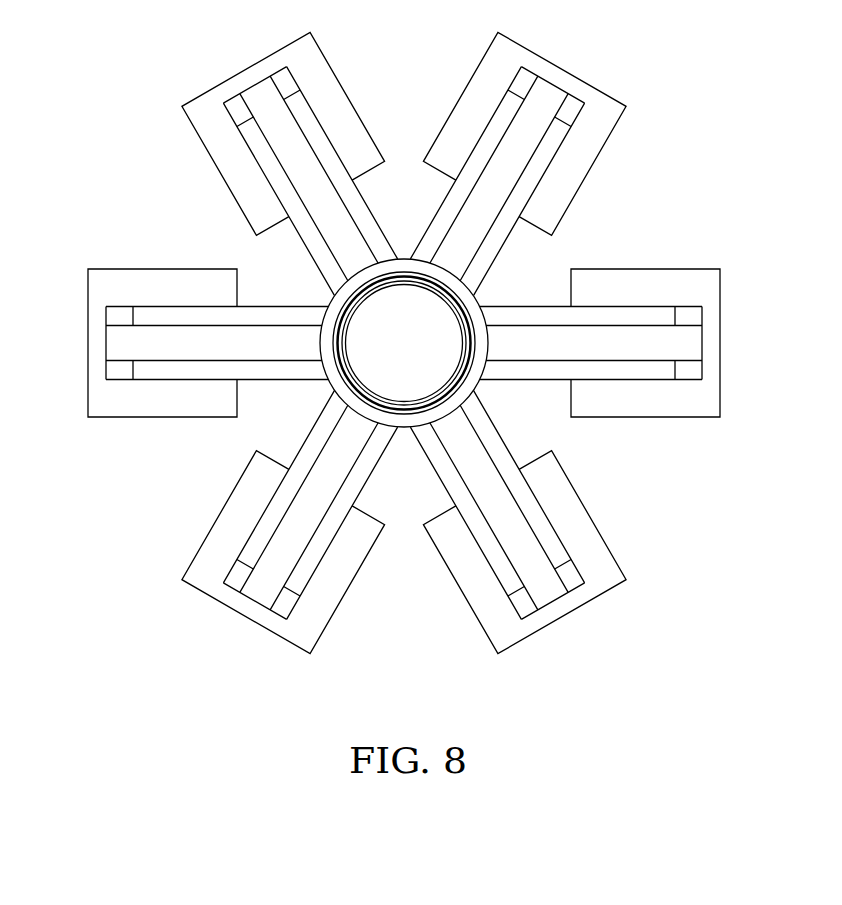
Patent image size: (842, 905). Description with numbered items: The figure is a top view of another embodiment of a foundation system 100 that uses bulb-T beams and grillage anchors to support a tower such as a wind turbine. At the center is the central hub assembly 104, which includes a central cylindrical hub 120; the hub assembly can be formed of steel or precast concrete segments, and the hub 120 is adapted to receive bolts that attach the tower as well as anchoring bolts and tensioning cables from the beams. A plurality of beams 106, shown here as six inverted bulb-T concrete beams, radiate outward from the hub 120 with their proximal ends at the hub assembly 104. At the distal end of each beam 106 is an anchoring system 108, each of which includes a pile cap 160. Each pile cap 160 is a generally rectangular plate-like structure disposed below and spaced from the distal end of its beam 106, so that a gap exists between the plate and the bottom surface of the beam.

The foundation system 100 is at (447, 350).
The central hub assembly 104 is at (439, 344).
The beam 106 is at (256, 306).
The anchoring system 108 is at (447, 350).
The central cylindrical hub 120 is at (478, 390).
The pile cap 160 is at (332, 84).